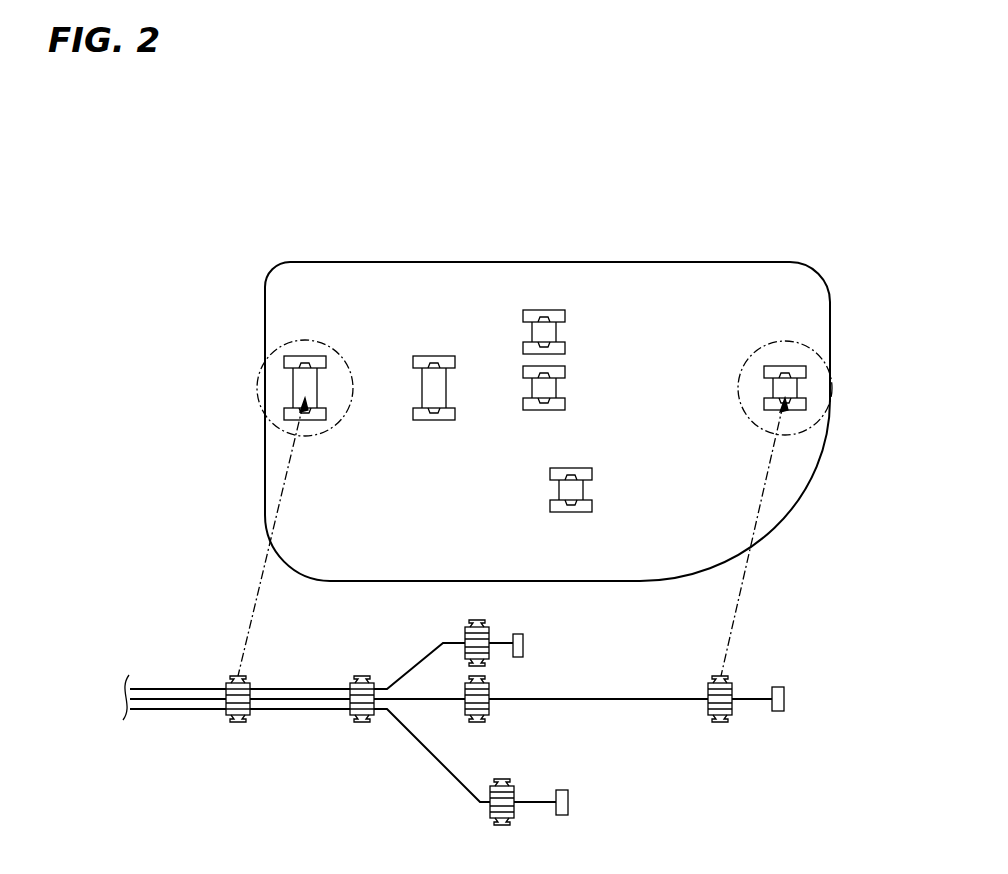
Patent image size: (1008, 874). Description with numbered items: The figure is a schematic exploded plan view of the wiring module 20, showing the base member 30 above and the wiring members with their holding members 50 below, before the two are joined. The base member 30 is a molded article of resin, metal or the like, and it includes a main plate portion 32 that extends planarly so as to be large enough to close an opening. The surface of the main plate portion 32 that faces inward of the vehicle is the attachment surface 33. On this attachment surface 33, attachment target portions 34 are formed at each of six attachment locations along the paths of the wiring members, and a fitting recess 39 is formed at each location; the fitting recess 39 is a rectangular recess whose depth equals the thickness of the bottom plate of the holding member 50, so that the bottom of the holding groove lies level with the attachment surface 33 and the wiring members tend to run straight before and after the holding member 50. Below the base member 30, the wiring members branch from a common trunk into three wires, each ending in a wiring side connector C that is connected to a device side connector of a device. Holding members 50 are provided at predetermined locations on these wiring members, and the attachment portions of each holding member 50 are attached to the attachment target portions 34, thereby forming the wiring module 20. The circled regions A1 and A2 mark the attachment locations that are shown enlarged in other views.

The wiring module 20 is at (217, 198).
The base member 30 is at (608, 243).
The main plate portion 32 is at (502, 262).
The attachment surface 33 is at (666, 280).
The attachment target portion 34 is at (327, 413).
The fitting recess 39 is at (303, 378).
The holding member 50 is at (250, 716).
The region A1 is at (815, 430).
The region A2 is at (262, 440).
The wiring side connector C is at (524, 647).